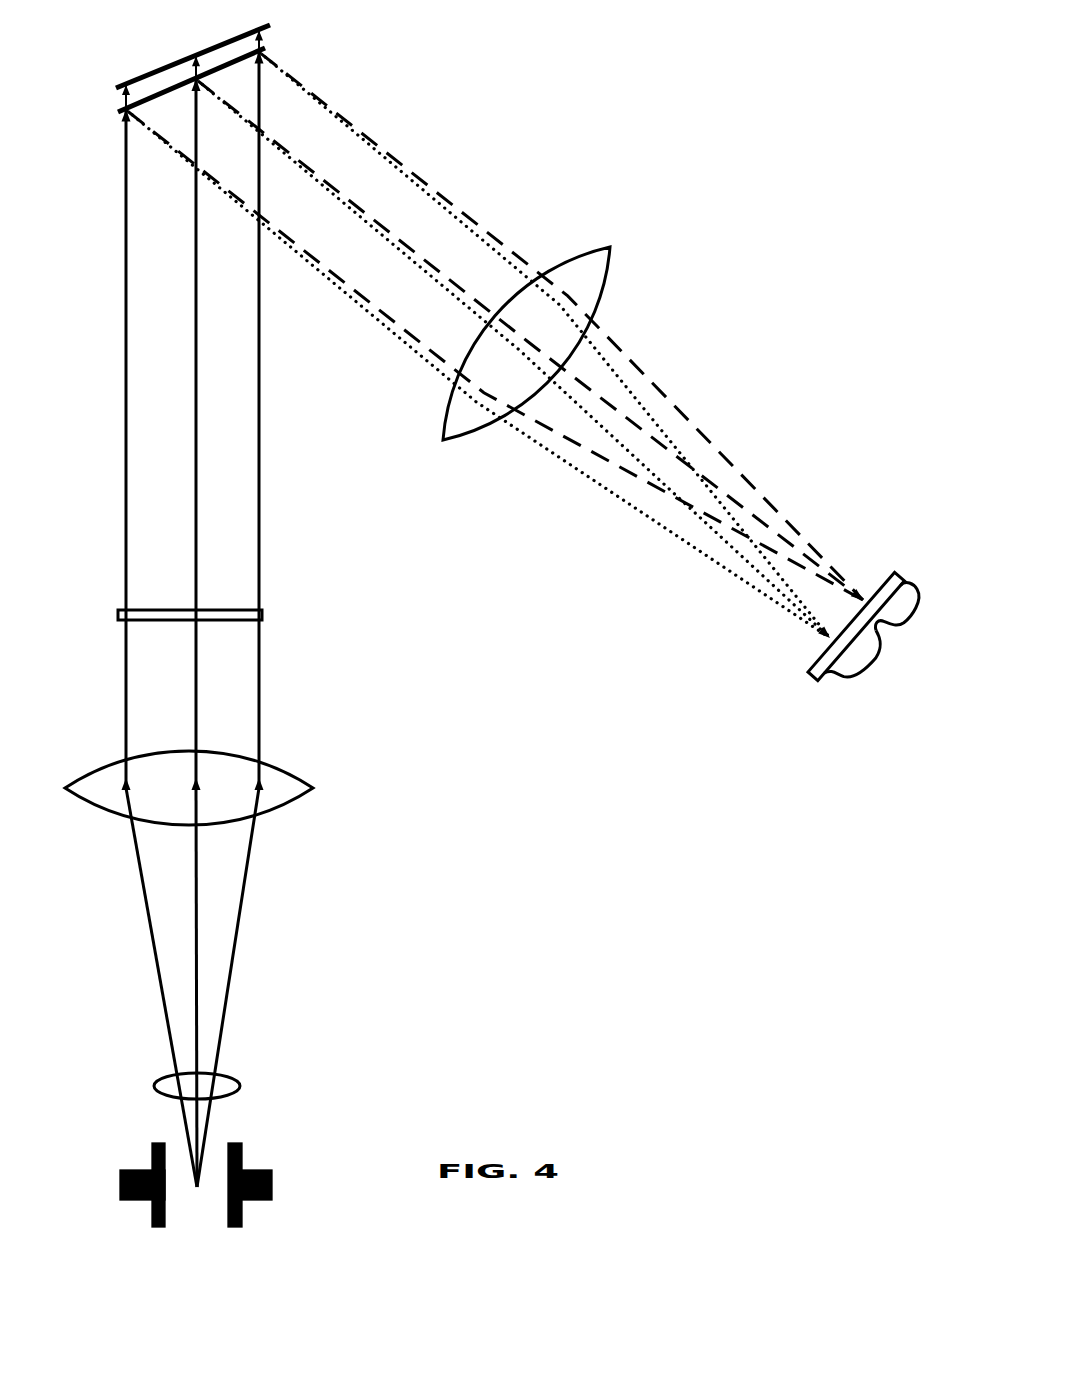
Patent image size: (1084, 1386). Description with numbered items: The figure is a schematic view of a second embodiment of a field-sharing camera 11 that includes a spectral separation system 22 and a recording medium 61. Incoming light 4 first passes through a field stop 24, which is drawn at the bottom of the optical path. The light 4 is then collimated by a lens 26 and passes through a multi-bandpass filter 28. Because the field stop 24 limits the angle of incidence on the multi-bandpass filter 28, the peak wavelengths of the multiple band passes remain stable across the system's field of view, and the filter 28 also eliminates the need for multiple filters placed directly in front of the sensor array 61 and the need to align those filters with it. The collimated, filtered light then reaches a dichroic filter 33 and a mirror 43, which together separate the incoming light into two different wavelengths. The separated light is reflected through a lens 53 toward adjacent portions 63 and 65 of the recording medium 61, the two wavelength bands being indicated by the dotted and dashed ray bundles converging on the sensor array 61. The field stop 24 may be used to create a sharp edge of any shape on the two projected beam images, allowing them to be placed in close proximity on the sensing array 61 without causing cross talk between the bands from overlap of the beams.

The incoming light 4 is at (240, 1086).
The optical system 11 is at (575, 875).
The spectral separation system 22 is at (112, 353).
The field stop 24 is at (229, 1192).
The lens 26 is at (300, 778).
The multi-bandpass filter 28 is at (263, 613).
The dichroic filter 33 is at (161, 96).
The mirror 43 is at (173, 93).
The lens 53 is at (612, 268).
The recording medium 61 is at (882, 611).
The portion of recording medium 63 is at (856, 657).
The portion of recording medium 65 is at (897, 610).